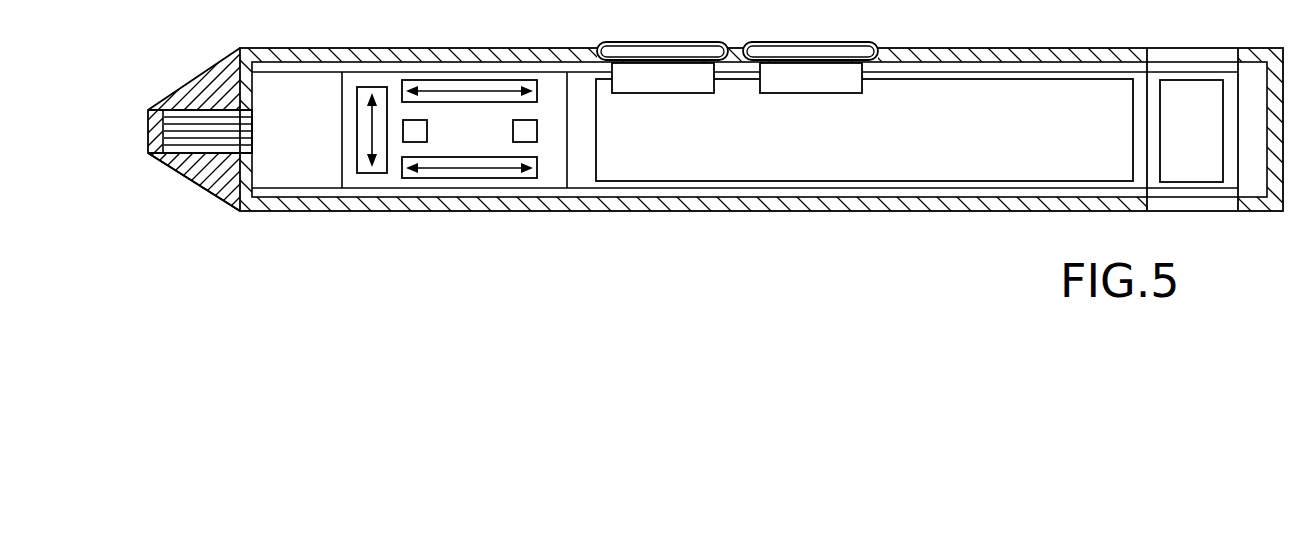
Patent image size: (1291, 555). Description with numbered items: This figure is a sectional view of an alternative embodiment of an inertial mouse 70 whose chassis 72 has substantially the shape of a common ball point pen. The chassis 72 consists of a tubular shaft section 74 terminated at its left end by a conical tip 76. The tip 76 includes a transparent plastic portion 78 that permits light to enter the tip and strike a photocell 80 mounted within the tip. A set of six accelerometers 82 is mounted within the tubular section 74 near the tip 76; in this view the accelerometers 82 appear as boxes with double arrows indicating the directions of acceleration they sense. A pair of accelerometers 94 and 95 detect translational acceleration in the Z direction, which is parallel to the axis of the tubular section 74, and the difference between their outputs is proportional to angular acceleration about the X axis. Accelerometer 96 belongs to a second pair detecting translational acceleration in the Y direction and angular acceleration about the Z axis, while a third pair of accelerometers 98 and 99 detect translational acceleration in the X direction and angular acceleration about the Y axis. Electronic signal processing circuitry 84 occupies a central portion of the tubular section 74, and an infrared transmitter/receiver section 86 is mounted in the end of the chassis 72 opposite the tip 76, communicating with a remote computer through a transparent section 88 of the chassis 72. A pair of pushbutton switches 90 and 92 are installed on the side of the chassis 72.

The mouse 70 is at (740, 220).
The chassis 72 is at (851, 220).
The tubular shaft section 74 is at (1027, 212).
The conical tip 76 is at (207, 63).
The transparent plastic portion 78 is at (148, 127).
The photocell 80 is at (192, 153).
The accelerometers 82 is at (456, 223).
The electronic signal processing circuitry 84 is at (965, 141).
The infrared transmitter/receiver section 86 is at (1199, 139).
The transparent section 88 is at (1186, 213).
The pushbutton switch 90 is at (804, 42).
The pushbutton switch 92 is at (656, 42).
The accelerometer 94 is at (468, 80).
The accelerometer 95 is at (483, 180).
The accelerometer 96 is at (383, 174).
The accelerometer 98 is at (515, 143).
The accelerometer 99 is at (458, 121).